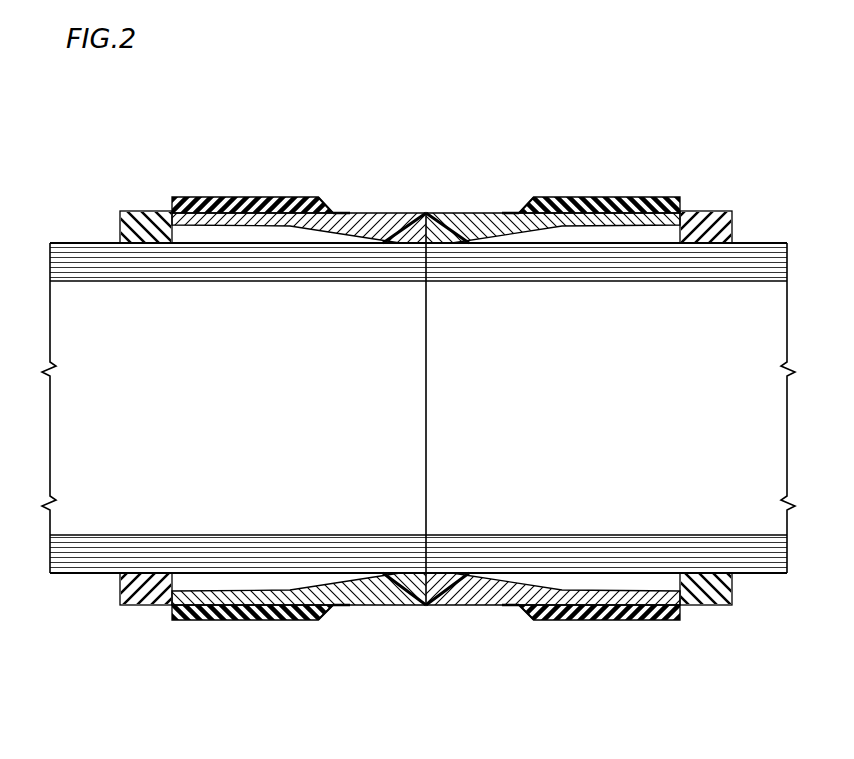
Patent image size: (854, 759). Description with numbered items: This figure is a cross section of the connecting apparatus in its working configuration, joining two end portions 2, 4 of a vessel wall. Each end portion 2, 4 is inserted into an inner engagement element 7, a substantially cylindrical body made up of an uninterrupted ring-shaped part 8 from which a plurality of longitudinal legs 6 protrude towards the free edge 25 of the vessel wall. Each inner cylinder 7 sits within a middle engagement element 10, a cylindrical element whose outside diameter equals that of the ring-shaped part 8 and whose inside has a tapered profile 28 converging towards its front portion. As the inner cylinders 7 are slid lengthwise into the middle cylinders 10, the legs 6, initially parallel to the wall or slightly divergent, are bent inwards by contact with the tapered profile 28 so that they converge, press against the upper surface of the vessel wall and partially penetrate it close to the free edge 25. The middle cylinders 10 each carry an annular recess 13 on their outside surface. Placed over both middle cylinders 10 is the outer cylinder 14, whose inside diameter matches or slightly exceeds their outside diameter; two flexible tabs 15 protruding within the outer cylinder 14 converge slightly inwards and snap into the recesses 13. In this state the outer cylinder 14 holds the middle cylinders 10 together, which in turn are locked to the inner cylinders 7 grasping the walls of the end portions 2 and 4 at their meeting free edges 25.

The end portion 2 is at (58, 242).
The end portion 4 is at (773, 268).
The longitudinal legs 6 is at (256, 233).
The inner engagement element 7 is at (150, 208).
The uninterrupted ring-shaped part 8 is at (125, 211).
The middle engagement element 10 is at (440, 213).
The annular recess 13 is at (334, 212).
The outer cylinder 14 is at (212, 196).
The flexible tabs 15 is at (316, 205).
The free edge 25 is at (427, 250).
The tapered profile 28 is at (443, 572).